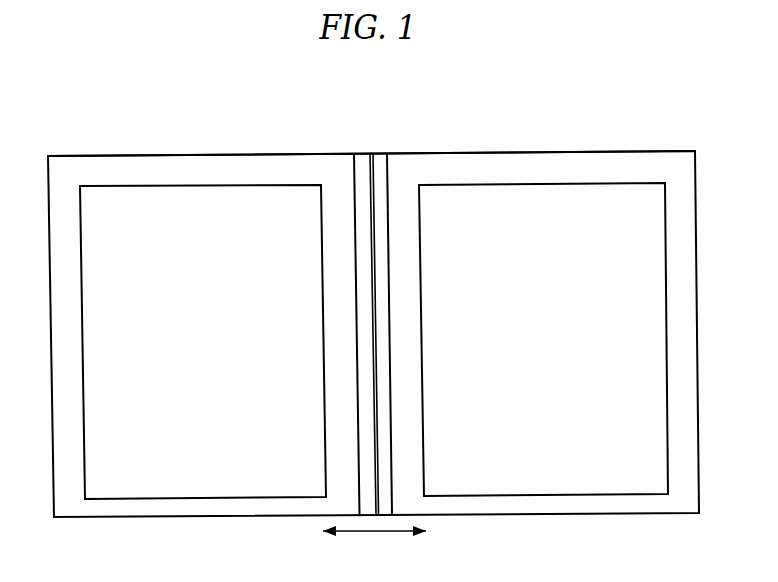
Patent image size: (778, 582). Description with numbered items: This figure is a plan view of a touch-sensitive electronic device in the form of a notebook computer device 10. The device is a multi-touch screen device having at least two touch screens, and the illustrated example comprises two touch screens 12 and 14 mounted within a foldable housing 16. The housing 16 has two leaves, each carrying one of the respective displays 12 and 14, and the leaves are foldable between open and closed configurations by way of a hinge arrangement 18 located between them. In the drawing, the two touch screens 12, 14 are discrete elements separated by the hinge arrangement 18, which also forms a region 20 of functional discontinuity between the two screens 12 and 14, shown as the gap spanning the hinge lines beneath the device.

The notebook computer device 10 is at (85, 130).
The touch screen 12 is at (182, 342).
The touch screen 14 is at (523, 338).
The foldable housing 16 is at (553, 160).
The hinge arrangement 18 is at (345, 199).
The region of functional discontinuity 20 is at (374, 544).